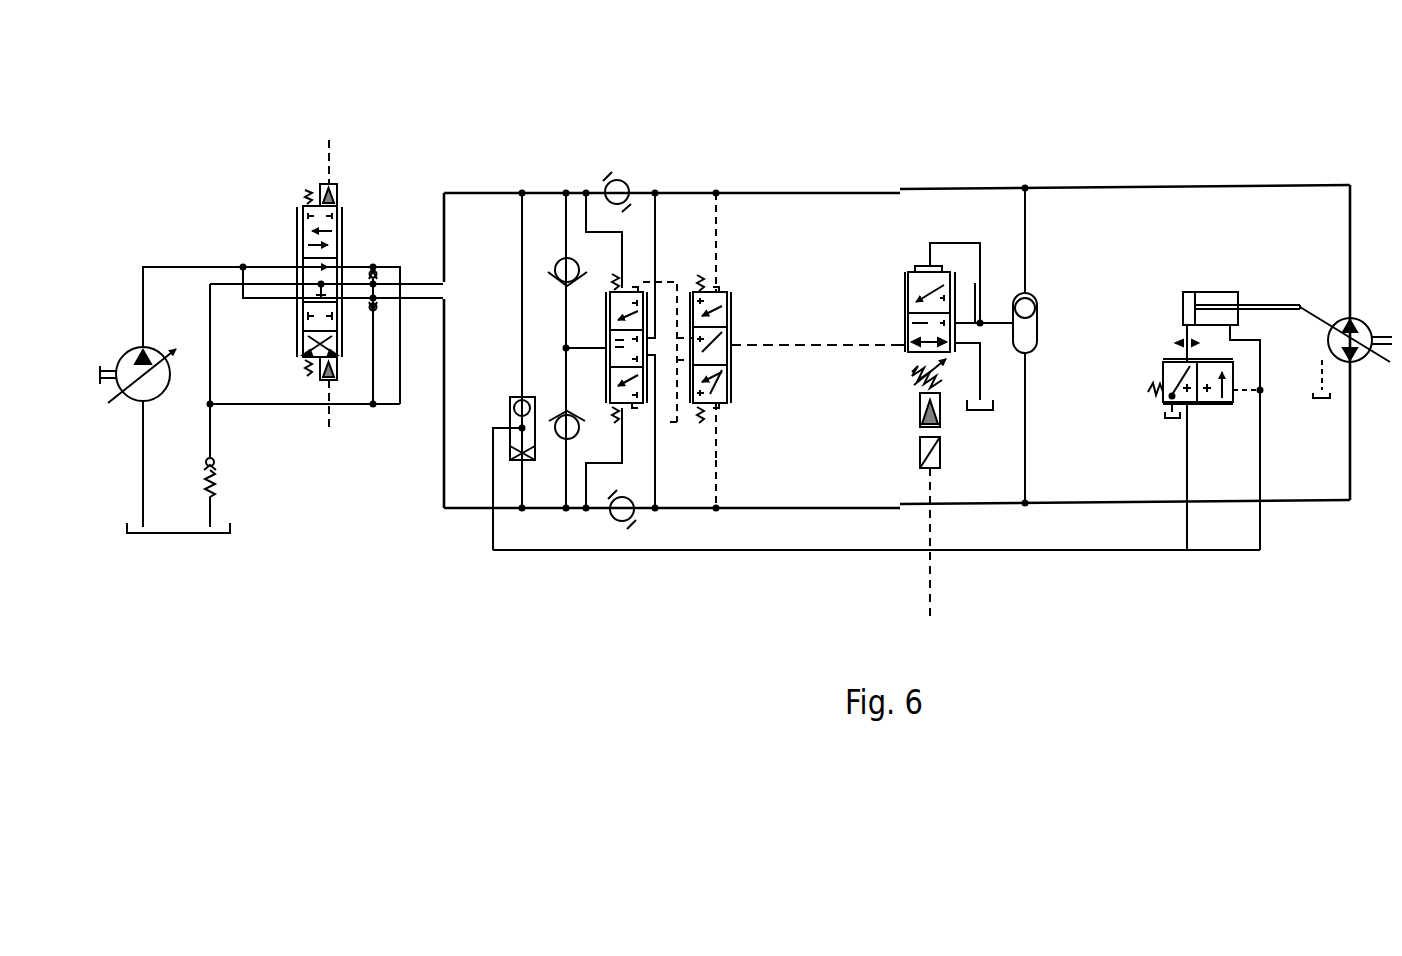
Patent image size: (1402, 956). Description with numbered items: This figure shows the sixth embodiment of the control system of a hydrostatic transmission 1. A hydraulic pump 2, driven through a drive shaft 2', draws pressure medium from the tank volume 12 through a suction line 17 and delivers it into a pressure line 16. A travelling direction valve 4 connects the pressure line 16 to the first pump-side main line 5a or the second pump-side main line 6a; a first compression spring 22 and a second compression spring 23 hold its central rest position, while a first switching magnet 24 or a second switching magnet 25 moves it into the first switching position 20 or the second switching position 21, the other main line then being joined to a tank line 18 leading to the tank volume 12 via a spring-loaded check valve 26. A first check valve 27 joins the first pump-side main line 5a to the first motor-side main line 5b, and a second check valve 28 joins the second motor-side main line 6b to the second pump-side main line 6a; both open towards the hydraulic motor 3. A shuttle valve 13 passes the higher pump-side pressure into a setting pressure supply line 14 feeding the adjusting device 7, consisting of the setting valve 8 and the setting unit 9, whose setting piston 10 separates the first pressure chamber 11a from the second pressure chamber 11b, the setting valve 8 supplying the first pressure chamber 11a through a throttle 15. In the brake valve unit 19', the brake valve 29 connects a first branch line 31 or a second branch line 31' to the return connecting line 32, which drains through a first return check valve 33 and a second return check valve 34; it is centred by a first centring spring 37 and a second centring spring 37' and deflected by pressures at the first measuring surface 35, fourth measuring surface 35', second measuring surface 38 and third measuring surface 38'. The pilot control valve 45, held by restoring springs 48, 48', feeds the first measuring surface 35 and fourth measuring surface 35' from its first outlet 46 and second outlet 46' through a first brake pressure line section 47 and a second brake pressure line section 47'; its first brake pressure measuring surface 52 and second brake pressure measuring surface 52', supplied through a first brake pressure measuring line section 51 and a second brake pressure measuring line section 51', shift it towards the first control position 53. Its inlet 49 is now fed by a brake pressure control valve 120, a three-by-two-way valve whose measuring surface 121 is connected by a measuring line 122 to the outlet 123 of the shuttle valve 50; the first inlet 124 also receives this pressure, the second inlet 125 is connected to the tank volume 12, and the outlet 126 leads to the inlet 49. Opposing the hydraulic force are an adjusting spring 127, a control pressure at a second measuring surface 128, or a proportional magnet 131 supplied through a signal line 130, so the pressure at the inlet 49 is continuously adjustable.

The hydrostatic transmission 1 is at (463, 80).
The hydraulic pump 2 is at (150, 394).
The drive shaft 2' is at (108, 347).
The hydraulic motor 3 is at (1362, 322).
The travelling direction valve 4 is at (305, 288).
The first pump-side main line 5a is at (463, 193).
The first motor-side main line 5b is at (1112, 186).
The second pump-side main line 6a is at (460, 510).
The second motor-side main line 6b is at (1112, 502).
The adjusting device 7 is at (1278, 404).
The setting valve 8 is at (1158, 362).
The setting unit 9 is at (1213, 262).
The setting piston 10 is at (1184, 294).
The first pressure chamber 11a is at (1183, 310).
The second pressure chamber 11b is at (1228, 294).
The tank volume 12 is at (176, 535).
The shuttle valve 13 is at (508, 416).
The setting pressure supply line 14 is at (548, 552).
The throttle 15 is at (1180, 344).
The pressure line 16 is at (163, 267).
The suction line 17 is at (143, 464).
The tank line 18 is at (210, 318).
The brake valve unit 19' is at (700, 95).
The first switching position 20 is at (303, 348).
The second switching position 21 is at (342, 248).
The first compression spring 22 is at (304, 368).
The second compression spring 23 is at (302, 192).
The first switching magnet 24 is at (338, 379).
The second switching magnet 25 is at (340, 200).
The spring-loaded check valve 26 is at (218, 480).
The first check valve 27 is at (618, 179).
The second check valve 28 is at (625, 520).
The brake valve 29 is at (588, 316).
The first branch line 31 is at (682, 369).
The second branch line 31' is at (657, 160).
The return connecting line 32 is at (565, 352).
The first return check valve 33 is at (555, 268).
The second return check valve 34 is at (567, 440).
The first measuring surface 35 is at (669, 334).
The fourth measuring surface 35' is at (678, 450).
The first centring spring 37 is at (577, 392).
The second centring spring 37' is at (577, 250).
The second measuring surface 38 is at (616, 240).
The third measuring surface 38' is at (618, 459).
The pilot control valve 45 is at (762, 334).
The first outlet 46 is at (751, 306).
The second outlet 46' is at (760, 365).
The first brake pressure line section 47 is at (662, 247).
The second brake pressure line section 47' is at (734, 484).
The first restoring spring 48 is at (705, 245).
The second restoring spring 48' is at (735, 436).
The inlet 49 is at (733, 350).
The shuttle valve 50 is at (1039, 324).
The first brake pressure measuring line section 51 is at (749, 366).
The second brake pressure measuring line section 51' is at (732, 167).
The first brake pressure measuring surface 52 is at (753, 428).
The second brake pressure measuring surface 52' is at (730, 255).
The first control position 53 is at (729, 395).
The brake pressure control valve 120 is at (908, 295).
The measuring surface 121 is at (936, 265).
The measuring line 122 is at (983, 251).
The outlet 123 is at (1030, 356).
The first inlet 124 is at (976, 298).
The second inlet 125 is at (962, 346).
The outlet 126 is at (905, 340).
The adjusting spring 127 is at (912, 373).
The second measuring surface 128 is at (920, 415).
The signal line 130 is at (932, 603).
The proportional magnet 131 is at (920, 455).